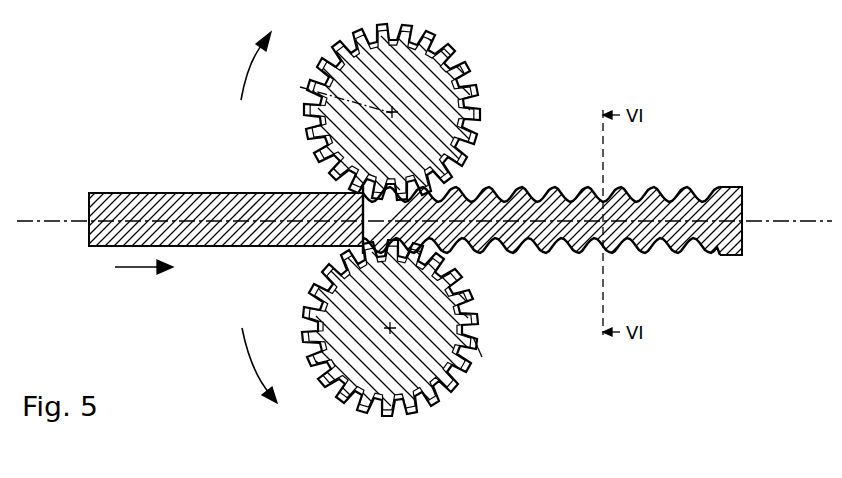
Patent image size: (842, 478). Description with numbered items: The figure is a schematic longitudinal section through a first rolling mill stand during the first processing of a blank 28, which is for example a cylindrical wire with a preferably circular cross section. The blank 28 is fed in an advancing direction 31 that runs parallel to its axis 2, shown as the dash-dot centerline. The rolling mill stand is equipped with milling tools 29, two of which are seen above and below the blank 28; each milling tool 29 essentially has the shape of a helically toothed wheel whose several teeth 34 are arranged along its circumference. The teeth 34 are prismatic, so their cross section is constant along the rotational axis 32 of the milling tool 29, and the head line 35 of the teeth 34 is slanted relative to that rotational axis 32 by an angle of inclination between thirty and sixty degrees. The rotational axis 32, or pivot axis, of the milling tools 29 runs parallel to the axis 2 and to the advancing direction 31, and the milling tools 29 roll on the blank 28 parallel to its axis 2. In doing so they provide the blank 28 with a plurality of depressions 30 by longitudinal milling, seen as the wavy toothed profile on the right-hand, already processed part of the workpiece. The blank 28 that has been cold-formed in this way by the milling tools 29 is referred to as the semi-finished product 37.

The axis 2 is at (67, 222).
The blank 28 is at (172, 202).
The milling tools 29 is at (432, 92).
The depressions 30 is at (614, 254).
The advancing direction 31 is at (133, 266).
The rotational axis 32 is at (326, 93).
The teeth 34 is at (462, 147).
The head line 35 is at (476, 348).
The semi-finished product 37 is at (695, 200).